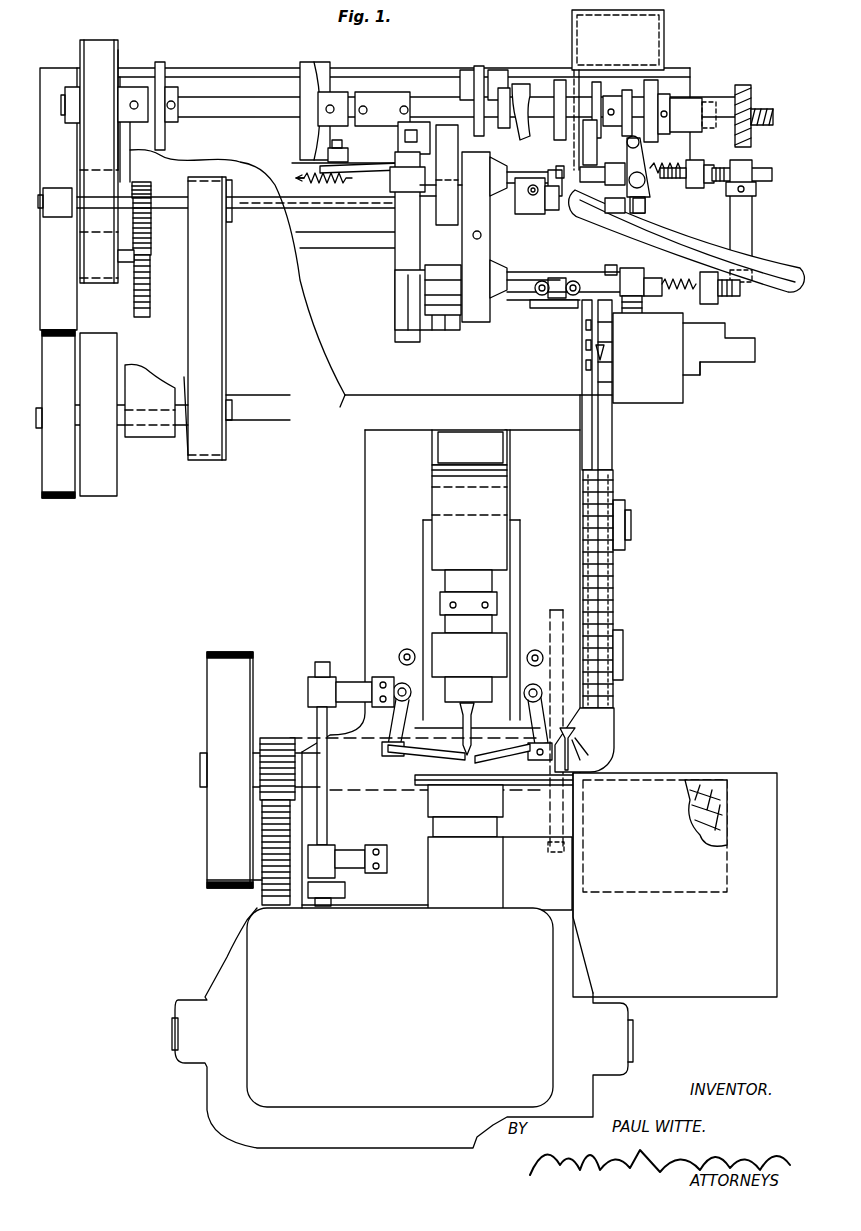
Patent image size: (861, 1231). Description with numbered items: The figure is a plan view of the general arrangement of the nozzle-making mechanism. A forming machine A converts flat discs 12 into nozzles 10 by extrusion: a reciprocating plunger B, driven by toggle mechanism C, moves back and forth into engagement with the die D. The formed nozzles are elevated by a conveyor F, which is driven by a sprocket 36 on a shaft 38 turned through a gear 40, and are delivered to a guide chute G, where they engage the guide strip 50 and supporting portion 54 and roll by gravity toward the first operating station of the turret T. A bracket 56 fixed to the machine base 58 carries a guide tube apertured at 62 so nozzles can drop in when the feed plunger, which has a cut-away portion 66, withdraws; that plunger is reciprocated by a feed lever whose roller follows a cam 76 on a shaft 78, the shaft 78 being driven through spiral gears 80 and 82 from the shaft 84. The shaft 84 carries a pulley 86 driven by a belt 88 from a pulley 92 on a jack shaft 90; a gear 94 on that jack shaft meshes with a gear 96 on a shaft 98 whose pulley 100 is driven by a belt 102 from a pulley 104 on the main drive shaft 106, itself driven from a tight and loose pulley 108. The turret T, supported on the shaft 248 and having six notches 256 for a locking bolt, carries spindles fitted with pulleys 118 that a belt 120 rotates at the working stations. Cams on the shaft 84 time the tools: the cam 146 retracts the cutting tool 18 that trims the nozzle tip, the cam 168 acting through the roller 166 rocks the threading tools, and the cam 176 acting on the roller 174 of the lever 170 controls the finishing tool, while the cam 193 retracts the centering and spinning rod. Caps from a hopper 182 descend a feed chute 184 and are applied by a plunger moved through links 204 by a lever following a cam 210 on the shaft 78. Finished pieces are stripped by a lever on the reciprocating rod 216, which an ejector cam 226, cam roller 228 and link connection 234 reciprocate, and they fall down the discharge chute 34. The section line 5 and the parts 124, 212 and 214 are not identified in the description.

The bearing bracket 5 is at (525, 195).
The nozzle 10 is at (590, 752).
The flat disc 12 is at (710, 780).
The cutting tool 18 is at (573, 282).
The discharge chute 34 is at (655, 236).
The sprocket 36 is at (614, 705).
The shaft 38 is at (623, 660).
The gear 40 is at (551, 720).
The guide strip 50 is at (583, 378).
The supporting portion 54 is at (612, 390).
The bracket 56 is at (628, 316).
The machine base 58 is at (348, 395).
The aperture 62 is at (600, 290).
The cut-away portion 66 is at (560, 308).
The cam 76 is at (795, 290).
The shaft 78 is at (752, 235).
The spiral gear 80 is at (773, 118).
The spiral gear 82 is at (743, 85).
The shaft 84 is at (200, 95).
The pulley 86 is at (125, 50).
The belt 88 is at (92, 40).
The jack shaft 90 is at (150, 265).
The pulley 92 is at (115, 283).
The gear 94 is at (150, 232).
The gear 96 is at (145, 182).
The shaft 98 is at (252, 213).
The pulley 100 is at (232, 190).
The belt 102 is at (222, 338).
The pulley 104 is at (226, 452).
The main drive shaft 106 is at (230, 412).
The tight and loose pulley 108 is at (60, 498).
The spindle pulley 118 is at (425, 300).
The belt 120 is at (440, 342).
The clamp 124 is at (436, 122).
The cam 146 is at (560, 80).
The roller 166 is at (632, 150).
The cam 168 is at (610, 96).
The lever 170 is at (554, 172).
The roller 174 is at (524, 181).
The cam 176 is at (525, 84).
The hopper 182 is at (664, 18).
The feed chute 184 is at (593, 82).
The cam 193 is at (650, 80).
The links 204 is at (698, 190).
The cam 210 is at (772, 174).
The stop block 212 is at (640, 215).
The link 214 is at (552, 212).
The reciprocating rod 216 is at (375, 174).
The ejector cam 226 is at (305, 62).
The cam roller 228 is at (348, 152).
The link connection 234 is at (324, 186).
The turret shaft 248 is at (343, 205).
The notches 256 is at (162, 62).
The nozzle forming machine A is at (500, 873).
The reciprocating plunger B is at (462, 720).
The toggle mechanism C is at (469, 566).
The die D is at (465, 811).
The conveyor F is at (613, 605).
The guide chute G is at (612, 440).
The turret T is at (462, 236).